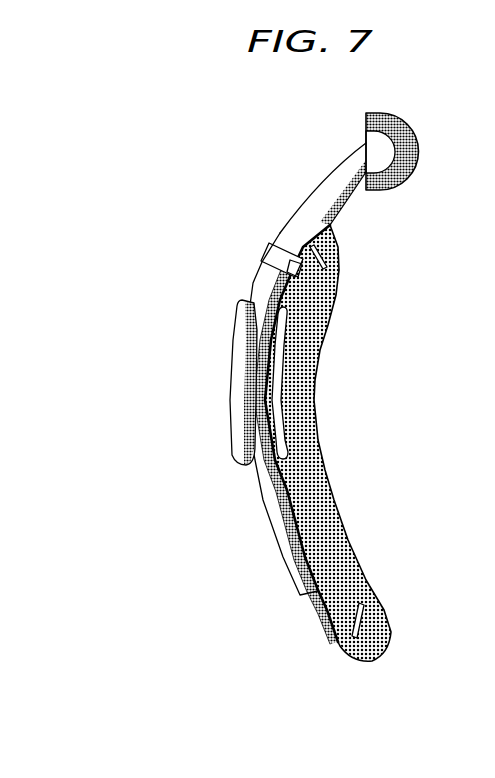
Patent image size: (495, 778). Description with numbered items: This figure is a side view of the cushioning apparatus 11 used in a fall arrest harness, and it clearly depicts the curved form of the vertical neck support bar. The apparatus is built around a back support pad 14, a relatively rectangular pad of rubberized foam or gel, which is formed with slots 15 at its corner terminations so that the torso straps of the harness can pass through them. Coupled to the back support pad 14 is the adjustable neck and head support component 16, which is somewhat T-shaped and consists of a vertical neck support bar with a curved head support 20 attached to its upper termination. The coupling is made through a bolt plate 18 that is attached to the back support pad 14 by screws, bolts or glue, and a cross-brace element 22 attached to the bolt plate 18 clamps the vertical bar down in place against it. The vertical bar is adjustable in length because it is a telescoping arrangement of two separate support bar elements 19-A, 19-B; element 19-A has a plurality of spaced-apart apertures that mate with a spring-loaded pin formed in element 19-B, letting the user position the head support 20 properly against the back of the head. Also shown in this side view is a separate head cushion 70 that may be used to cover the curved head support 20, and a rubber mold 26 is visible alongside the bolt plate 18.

The cushioning apparatus 11 is at (194, 218).
The back support pad 14 is at (332, 545).
The slots 15 is at (377, 620).
The adjustable neck and head support component 16 is at (148, 218).
The bolt plate 18 is at (272, 381).
The support bar element 19-A is at (268, 284).
The support bar element 19-B is at (264, 490).
The head support 20 is at (364, 142).
The cross-brace element 22 is at (270, 243).
The rubber mold 26 is at (264, 370).
The head cushion 70 is at (420, 150).